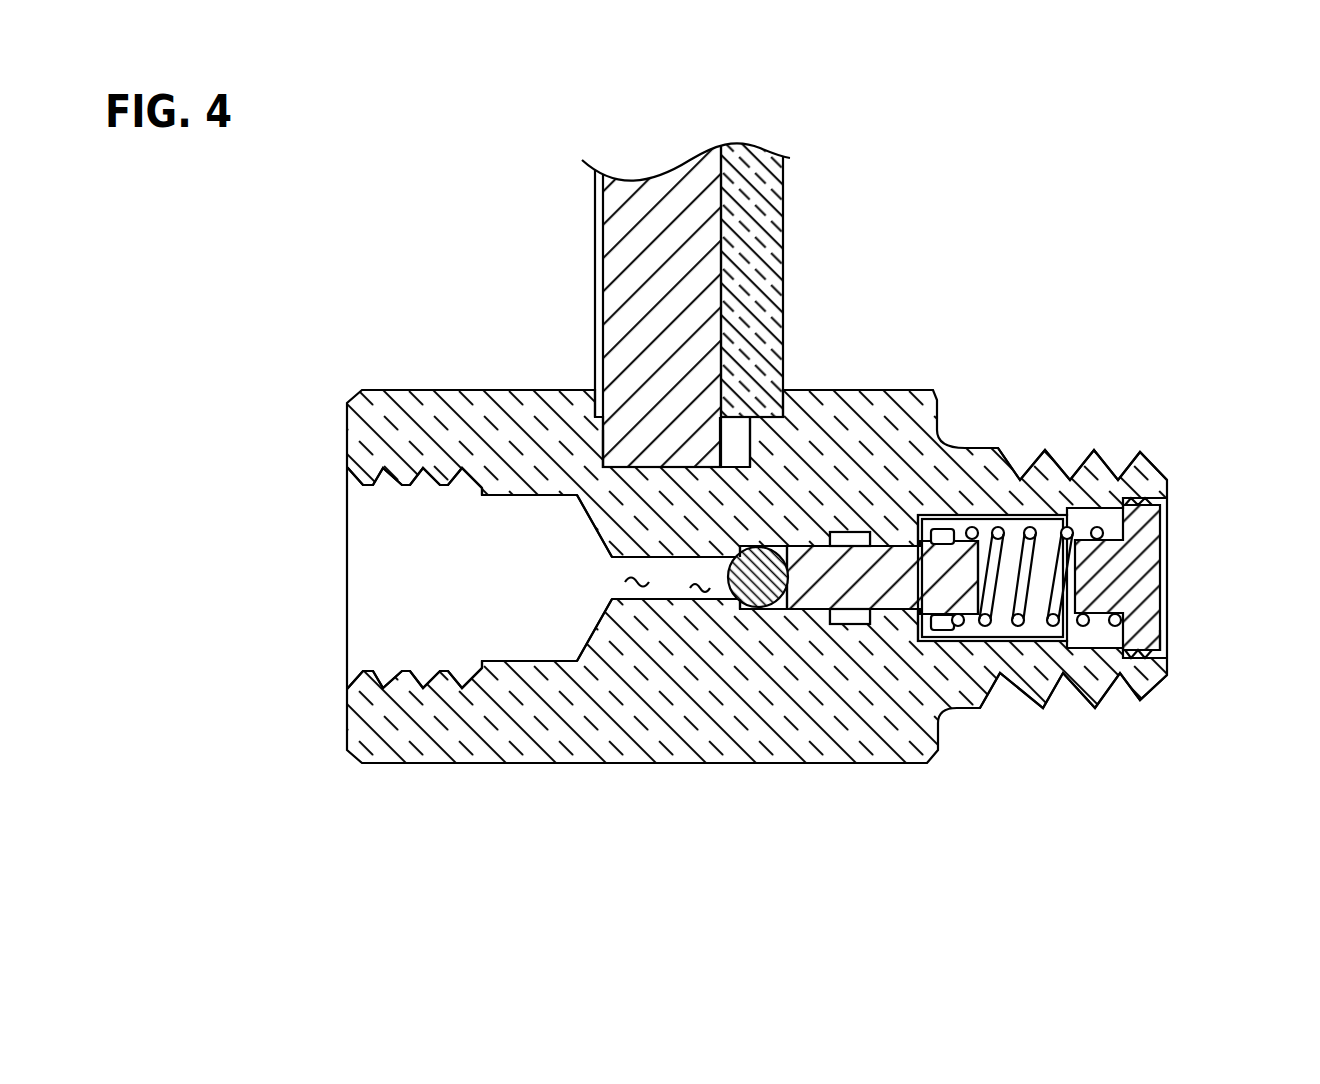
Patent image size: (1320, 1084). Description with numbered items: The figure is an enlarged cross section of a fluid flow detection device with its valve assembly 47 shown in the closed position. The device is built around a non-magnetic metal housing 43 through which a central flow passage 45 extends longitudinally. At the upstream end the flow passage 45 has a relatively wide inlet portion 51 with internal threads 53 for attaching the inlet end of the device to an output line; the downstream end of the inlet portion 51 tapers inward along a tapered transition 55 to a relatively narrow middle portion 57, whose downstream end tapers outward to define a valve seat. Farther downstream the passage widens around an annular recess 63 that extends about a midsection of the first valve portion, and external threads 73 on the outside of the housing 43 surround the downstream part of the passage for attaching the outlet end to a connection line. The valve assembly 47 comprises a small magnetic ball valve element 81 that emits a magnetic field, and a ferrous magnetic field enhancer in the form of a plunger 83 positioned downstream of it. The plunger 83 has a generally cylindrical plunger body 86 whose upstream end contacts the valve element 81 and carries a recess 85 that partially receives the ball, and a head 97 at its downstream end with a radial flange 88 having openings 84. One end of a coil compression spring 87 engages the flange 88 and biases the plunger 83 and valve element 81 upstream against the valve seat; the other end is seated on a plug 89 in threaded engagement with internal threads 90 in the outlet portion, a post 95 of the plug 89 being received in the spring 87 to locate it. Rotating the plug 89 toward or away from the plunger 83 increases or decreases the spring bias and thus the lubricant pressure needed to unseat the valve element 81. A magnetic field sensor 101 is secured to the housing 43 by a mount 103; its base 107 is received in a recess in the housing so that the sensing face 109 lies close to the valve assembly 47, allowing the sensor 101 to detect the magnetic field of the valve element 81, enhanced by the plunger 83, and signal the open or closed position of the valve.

The housing 43 is at (368, 768).
The flow passage 45 is at (702, 603).
The valve assembly 47 is at (882, 593).
The inlet portion 51 is at (398, 568).
The internal threads 53 is at (388, 668).
The tapered transition 55 is at (597, 628).
The middle portion 57 is at (645, 592).
The annular recess 63 is at (862, 538).
The external threads 73 is at (1118, 678).
The magnetic valve element 81 is at (742, 599).
The magnetic field enhancer (plunger) 83 is at (822, 602).
The openings 84 is at (946, 530).
The recess 85 is at (762, 551).
The plunger body 86 is at (878, 593).
The coil compression spring 87 is at (1022, 624).
The radial flange 88 is at (928, 618).
The plug 89 is at (1174, 534).
The internal threads 90 is at (1166, 652).
The post 95 is at (1112, 562).
The head 97 is at (988, 548).
The magnetic field sensor 101 is at (675, 293).
The mount 103 is at (758, 190).
The base 107 is at (622, 290).
The sensing face 109 is at (613, 488).